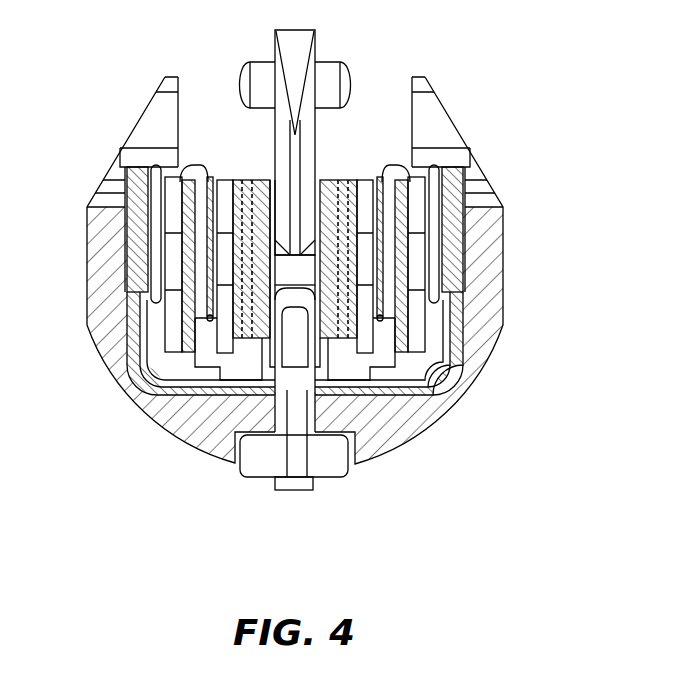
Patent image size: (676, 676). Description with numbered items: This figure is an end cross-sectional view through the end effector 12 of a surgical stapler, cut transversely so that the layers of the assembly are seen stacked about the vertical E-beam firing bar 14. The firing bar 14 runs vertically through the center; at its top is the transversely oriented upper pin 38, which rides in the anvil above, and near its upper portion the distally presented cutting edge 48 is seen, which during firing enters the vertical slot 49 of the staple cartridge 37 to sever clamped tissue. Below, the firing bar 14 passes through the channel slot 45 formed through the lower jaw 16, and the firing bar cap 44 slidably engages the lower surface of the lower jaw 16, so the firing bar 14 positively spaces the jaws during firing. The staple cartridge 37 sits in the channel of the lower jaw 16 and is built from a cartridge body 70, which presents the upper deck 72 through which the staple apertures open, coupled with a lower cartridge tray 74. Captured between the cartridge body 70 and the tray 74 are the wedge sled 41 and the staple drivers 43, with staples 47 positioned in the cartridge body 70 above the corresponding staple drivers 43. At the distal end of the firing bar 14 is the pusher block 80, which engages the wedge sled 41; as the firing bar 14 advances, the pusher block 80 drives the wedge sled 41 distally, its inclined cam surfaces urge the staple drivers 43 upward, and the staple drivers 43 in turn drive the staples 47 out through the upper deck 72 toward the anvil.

The end effector 12 is at (530, 132).
The firing bar 14 is at (320, 133).
The lower jaw 16 is at (505, 338).
The staple cartridge 37 is at (235, 170).
The upper pin 38 is at (333, 80).
The wedge sled 41 is at (273, 412).
The staple drivers 43 is at (157, 362).
The firing bar cap 44 is at (257, 462).
The channel slot 45 is at (245, 448).
The staples 47 is at (207, 262).
The cutting edge 48 is at (302, 177).
The vertical slot 49 is at (270, 197).
The cartridge body 70 is at (453, 272).
The upper deck 72 is at (370, 177).
The lower cartridge tray 74 is at (458, 390).
The pusher block 80 is at (295, 340).